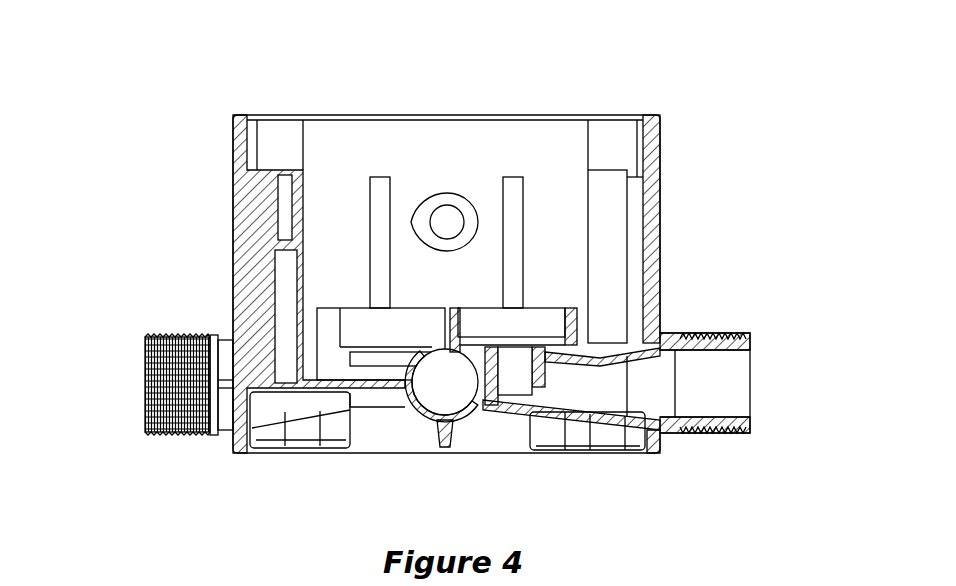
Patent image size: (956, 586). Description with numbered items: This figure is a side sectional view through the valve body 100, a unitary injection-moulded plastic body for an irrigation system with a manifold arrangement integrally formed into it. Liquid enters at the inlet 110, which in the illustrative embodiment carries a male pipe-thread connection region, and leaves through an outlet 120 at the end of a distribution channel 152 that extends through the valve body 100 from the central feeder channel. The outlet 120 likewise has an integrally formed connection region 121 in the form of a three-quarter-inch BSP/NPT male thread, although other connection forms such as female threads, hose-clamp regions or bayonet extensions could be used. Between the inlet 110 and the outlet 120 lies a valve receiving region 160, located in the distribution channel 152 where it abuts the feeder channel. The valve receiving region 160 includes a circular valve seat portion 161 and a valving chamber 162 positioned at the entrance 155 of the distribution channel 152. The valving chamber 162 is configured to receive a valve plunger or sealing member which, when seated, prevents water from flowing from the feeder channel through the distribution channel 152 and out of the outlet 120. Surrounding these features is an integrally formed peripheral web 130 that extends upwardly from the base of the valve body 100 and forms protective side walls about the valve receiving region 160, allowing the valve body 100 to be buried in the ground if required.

The valve body 100 is at (695, 101).
The inlet 110 is at (439, 398).
The outlet 120 is at (757, 381).
The connection region 121 is at (178, 435).
The peripheral web 130 is at (660, 233).
The distribution channel 152 is at (712, 378).
The entrance 155 is at (485, 392).
The valve receiving region 160 is at (534, 326).
The valve seat portion 161 is at (470, 377).
The valving chamber 162 is at (516, 362).